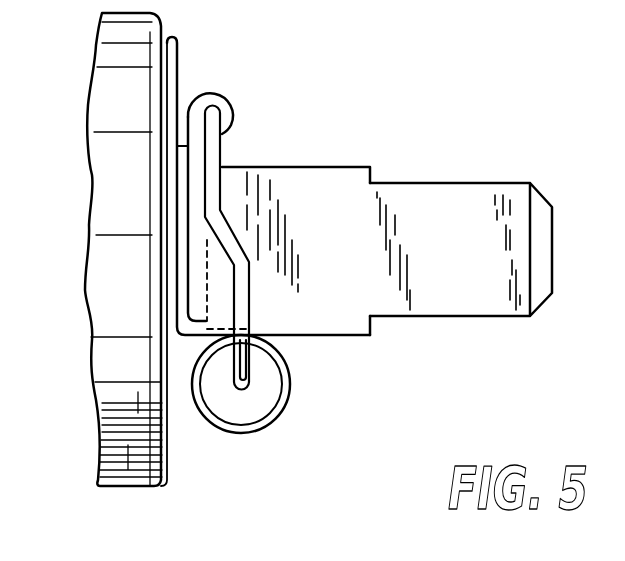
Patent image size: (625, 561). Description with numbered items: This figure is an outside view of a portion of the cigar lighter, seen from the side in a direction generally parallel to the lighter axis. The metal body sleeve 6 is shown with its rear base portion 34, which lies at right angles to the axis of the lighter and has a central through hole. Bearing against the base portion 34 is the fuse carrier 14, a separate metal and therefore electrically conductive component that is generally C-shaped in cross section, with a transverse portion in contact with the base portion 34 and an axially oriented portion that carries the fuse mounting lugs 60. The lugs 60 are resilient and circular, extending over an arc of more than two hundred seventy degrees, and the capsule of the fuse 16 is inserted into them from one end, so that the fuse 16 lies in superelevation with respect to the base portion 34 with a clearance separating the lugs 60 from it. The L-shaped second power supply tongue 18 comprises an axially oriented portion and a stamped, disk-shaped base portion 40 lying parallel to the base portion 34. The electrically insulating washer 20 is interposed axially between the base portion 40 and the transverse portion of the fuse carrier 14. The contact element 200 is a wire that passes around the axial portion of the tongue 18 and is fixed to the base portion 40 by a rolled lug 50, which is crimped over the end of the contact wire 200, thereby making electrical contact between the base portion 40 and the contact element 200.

The body sleeve 6 is at (130, 487).
The fuse carrier 14 is at (180, 80).
The fuse 16 is at (253, 387).
The second power supply tongue 18 is at (493, 287).
The insulating washer 20 is at (183, 285).
The base portion 34 is at (168, 445).
The base portion 40 is at (147, 317).
The rolled lug 50 is at (231, 106).
The fuse mounting lugs 60 is at (288, 410).
The contact element 200 is at (235, 235).